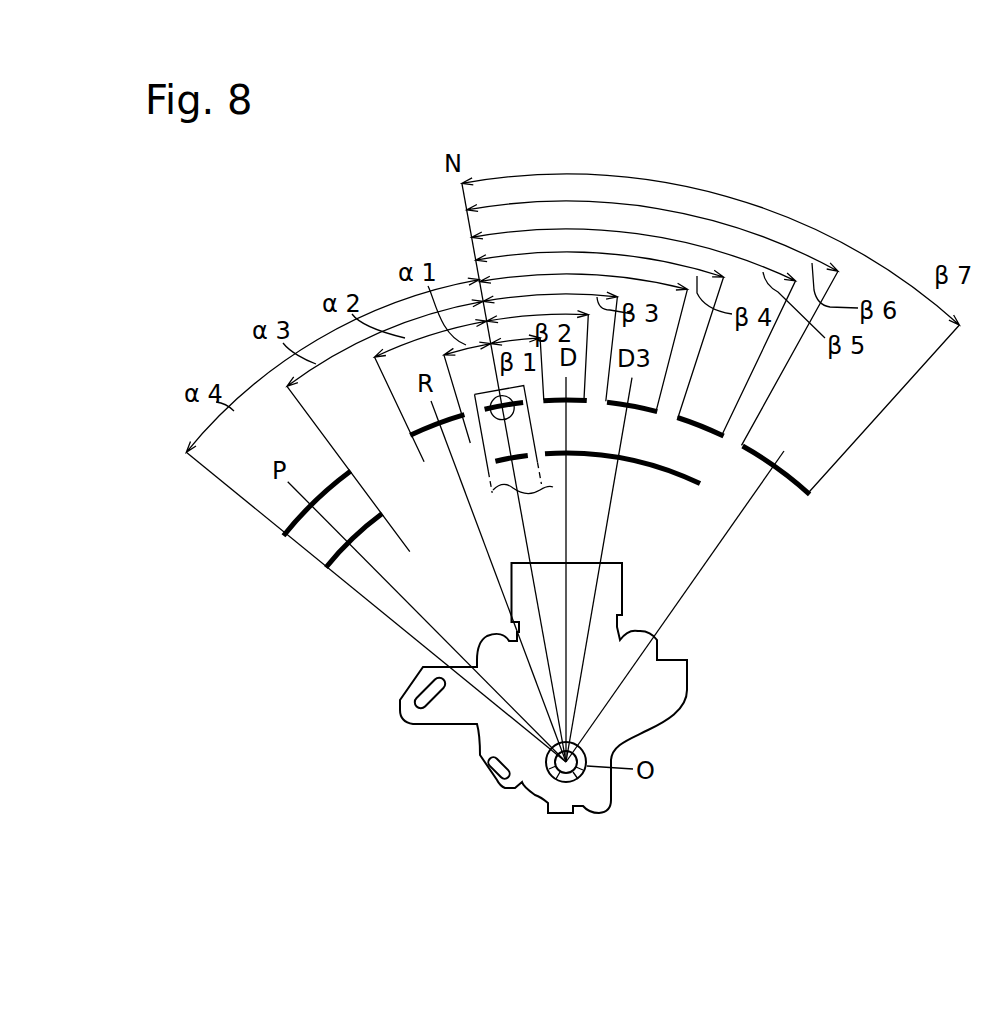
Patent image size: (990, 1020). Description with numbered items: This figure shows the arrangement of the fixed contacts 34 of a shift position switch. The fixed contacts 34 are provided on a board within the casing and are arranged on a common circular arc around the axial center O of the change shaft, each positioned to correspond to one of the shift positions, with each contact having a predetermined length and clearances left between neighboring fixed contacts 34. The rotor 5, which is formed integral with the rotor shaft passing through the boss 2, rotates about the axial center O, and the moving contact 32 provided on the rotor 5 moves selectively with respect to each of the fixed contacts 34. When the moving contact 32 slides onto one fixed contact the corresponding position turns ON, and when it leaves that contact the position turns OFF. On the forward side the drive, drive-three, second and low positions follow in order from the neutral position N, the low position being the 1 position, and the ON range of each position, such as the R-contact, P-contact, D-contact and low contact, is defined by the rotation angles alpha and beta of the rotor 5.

The detection device body / sector 1 is at (431, 760).
The boss 2 is at (566, 762).
The rotor 5 is at (495, 488).
The moving contact 32 is at (492, 419).
The fixed contacts 34 is at (316, 535).